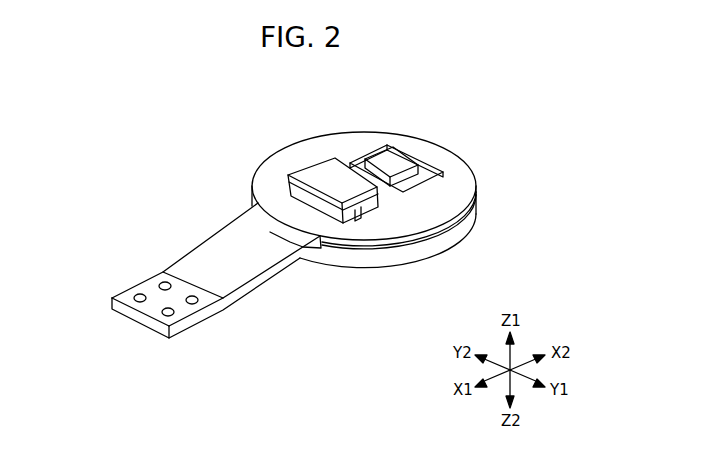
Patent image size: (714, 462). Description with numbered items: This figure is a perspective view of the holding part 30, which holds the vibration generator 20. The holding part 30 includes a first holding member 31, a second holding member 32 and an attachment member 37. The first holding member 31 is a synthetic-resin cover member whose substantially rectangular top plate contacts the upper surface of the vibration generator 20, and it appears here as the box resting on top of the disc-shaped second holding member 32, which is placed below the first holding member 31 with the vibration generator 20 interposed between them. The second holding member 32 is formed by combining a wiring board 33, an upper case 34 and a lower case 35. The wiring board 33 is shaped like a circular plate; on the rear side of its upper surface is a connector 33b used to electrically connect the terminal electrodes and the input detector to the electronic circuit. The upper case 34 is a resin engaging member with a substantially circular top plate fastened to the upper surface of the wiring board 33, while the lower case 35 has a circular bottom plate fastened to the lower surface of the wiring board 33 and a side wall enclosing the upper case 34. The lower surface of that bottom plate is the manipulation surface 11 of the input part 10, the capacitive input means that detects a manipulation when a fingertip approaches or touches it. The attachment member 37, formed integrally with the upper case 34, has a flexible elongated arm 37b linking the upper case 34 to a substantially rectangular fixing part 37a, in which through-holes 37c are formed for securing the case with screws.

The holding part 30 is at (220, 93).
The vibration generator 20 is at (304, 170).
The first holding member 31 is at (316, 183).
The second holding member 32 is at (507, 267).
The wiring board 33 is at (443, 195).
The connector 33b is at (392, 158).
The upper case 34 is at (437, 157).
The lower case 35 is at (443, 240).
The attachment member 37 is at (233, 245).
The fixing part 37a is at (150, 307).
The arm 37b is at (210, 262).
The through-holes 37c is at (163, 282).
The manipulation surface 11 is at (397, 272).
The input part 10 is at (380, 219).